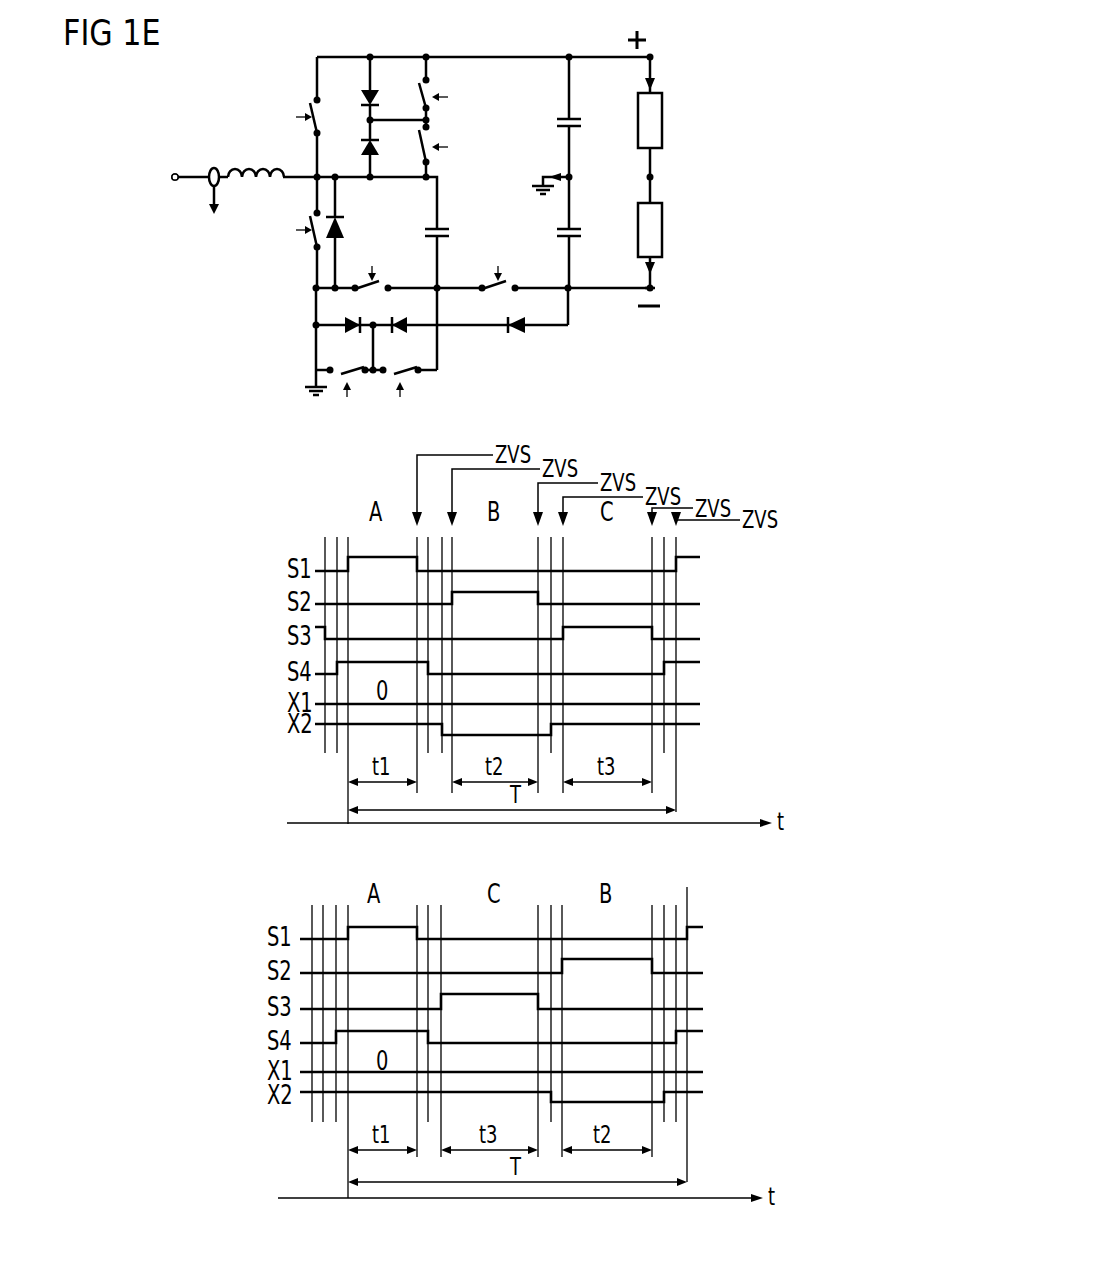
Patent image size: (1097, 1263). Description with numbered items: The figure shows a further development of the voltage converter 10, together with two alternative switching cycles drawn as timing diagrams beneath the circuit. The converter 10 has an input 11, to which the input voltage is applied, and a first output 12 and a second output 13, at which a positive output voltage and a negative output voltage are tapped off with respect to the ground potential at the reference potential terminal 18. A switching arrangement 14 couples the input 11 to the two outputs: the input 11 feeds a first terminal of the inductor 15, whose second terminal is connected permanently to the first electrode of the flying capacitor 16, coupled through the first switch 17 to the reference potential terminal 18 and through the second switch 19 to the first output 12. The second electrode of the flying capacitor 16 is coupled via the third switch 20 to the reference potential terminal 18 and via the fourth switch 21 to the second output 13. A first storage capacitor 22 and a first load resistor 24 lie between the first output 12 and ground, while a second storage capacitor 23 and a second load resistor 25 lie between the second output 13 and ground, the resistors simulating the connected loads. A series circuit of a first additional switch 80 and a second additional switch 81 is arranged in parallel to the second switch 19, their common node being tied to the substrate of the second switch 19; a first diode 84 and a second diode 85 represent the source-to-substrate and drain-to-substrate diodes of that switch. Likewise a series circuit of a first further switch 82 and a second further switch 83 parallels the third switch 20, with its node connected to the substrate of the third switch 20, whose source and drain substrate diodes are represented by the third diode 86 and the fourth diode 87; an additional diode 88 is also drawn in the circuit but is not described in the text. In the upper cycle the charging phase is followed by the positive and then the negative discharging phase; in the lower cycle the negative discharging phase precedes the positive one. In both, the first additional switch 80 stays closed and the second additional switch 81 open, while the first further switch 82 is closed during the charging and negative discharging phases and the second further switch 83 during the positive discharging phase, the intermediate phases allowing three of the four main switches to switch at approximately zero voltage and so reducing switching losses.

The voltage converter 10 is at (182, 114).
The input 11 is at (173, 183).
The first output 12 is at (656, 60).
The second output 13 is at (656, 290).
The switching arrangement 14 is at (250, 89).
The inductor 15 is at (257, 190).
The flying capacitor 16 is at (454, 218).
The first switch 17 is at (311, 240).
The reference potential terminal 18 is at (538, 188).
The second switch 19 is at (321, 117).
The third switch 20 is at (377, 274).
The fourth switch 21 is at (503, 274).
The first storage capacitor 22 is at (568, 118).
The second storage capacitor 23 is at (566, 232).
The first load resistor 24 is at (663, 121).
The second load resistor 25 is at (663, 231).
The first additional switch 80 is at (426, 97).
The second additional switch 81 is at (427, 145).
The first further switch 82 is at (356, 372).
The second further switch 83 is at (410, 372).
The first diode 84 is at (378, 98).
The second diode 85 is at (378, 148).
The third diode 86 is at (352, 331).
The fourth diode 87 is at (396, 331).
The diode 88 is at (344, 228).